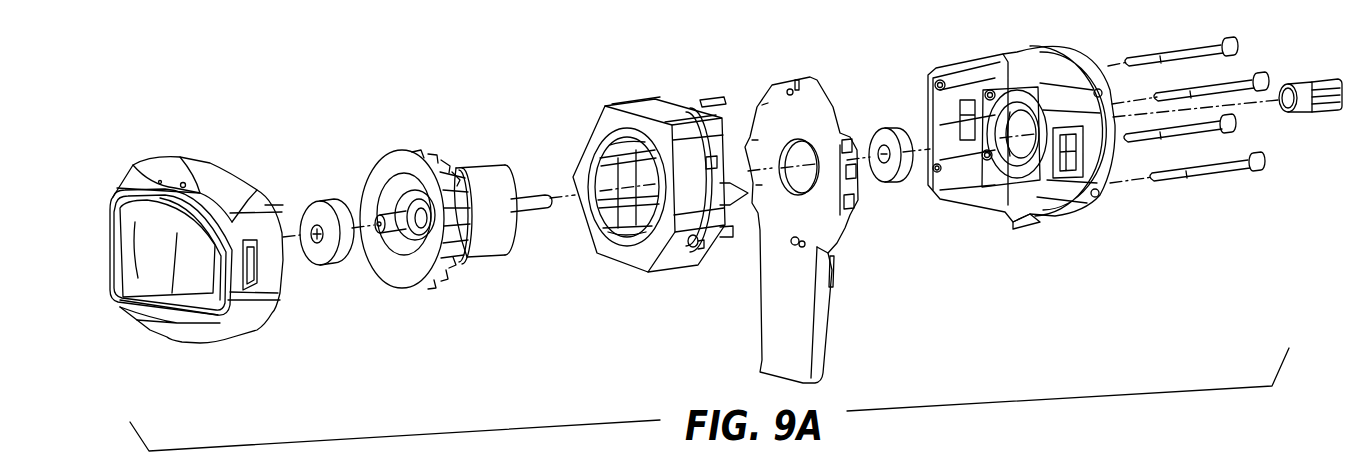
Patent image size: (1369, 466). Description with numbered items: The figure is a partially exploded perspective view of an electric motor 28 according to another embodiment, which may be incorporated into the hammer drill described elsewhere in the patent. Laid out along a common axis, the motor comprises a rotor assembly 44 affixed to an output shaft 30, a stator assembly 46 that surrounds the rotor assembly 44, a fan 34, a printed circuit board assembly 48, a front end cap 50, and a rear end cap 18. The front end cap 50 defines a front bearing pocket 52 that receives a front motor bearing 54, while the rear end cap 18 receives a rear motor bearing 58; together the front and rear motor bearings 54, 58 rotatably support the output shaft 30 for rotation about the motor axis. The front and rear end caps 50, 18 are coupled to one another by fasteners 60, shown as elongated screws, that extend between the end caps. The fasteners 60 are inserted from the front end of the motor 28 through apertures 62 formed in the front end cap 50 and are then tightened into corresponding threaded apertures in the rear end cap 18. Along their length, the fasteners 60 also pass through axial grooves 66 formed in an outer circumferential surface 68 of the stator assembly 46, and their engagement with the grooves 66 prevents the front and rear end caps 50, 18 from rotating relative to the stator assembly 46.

The rear end cap 18 is at (220, 160).
The electric motor 28 is at (405, 88).
The output shaft 30 is at (520, 205).
The fan 34 is at (392, 165).
The rotor assembly 44 is at (475, 271).
The stator assembly 46 is at (651, 188).
The printed circuit board assembly 48 is at (836, 304).
The front end cap 50 is at (989, 170).
The front bearing pocket 52 is at (992, 180).
The front motor bearing 54 is at (885, 177).
The rear motor bearing 58 is at (316, 205).
The fasteners 60 is at (1195, 172).
The apertures 62 is at (936, 87).
The axial grooves 66 is at (699, 252).
The outer circumferential surface 68 is at (687, 120).